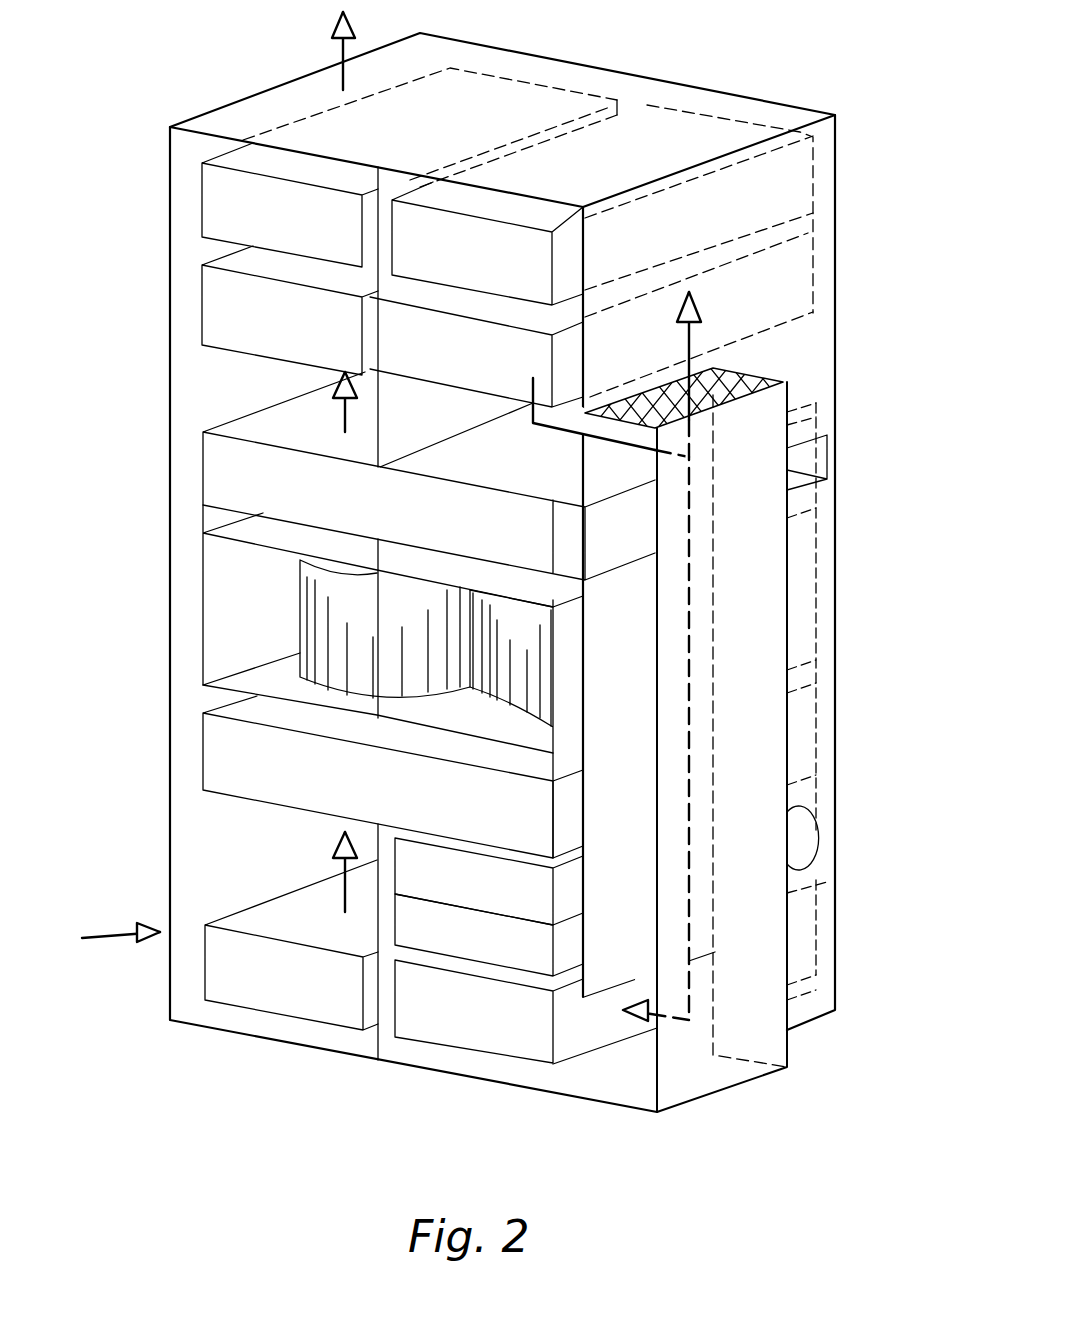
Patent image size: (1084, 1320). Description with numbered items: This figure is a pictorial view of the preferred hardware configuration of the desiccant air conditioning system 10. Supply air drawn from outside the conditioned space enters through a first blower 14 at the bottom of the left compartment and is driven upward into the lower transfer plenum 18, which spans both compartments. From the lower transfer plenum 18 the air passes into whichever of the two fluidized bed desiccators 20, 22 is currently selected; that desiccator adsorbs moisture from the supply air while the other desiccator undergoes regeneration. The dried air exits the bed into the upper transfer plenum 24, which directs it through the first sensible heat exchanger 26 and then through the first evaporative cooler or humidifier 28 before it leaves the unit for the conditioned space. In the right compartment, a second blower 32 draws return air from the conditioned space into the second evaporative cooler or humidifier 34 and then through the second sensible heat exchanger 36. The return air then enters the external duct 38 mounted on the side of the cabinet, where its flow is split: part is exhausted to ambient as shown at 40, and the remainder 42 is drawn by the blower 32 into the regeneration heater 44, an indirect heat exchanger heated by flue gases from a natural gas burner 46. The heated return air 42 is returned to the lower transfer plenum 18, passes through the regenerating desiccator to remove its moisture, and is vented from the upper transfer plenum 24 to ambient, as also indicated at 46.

The air conditioning system 10 is at (873, 305).
The first blower 14 is at (235, 960).
The lower transfer plenum 18 is at (235, 757).
The fluidized bed desiccator 20 is at (368, 609).
The fluidized bed desiccator 22 is at (414, 609).
The upper transfer plenum 24 is at (238, 475).
The first sensible heat exchanger 26 is at (233, 305).
The first evaporative cooler or humidifier 28 is at (233, 200).
The second blower 32 is at (425, 995).
The second evaporative cooler or humidifier 34 is at (421, 241).
The second sensible heat exchanger 36 is at (411, 338).
The external duct 38 is at (771, 566).
The exhaust to ambient 40 is at (693, 365).
The return air for regeneration 42 is at (713, 719).
The regeneration heater 44 is at (425, 873).
The natural gas burner 46 is at (425, 926).